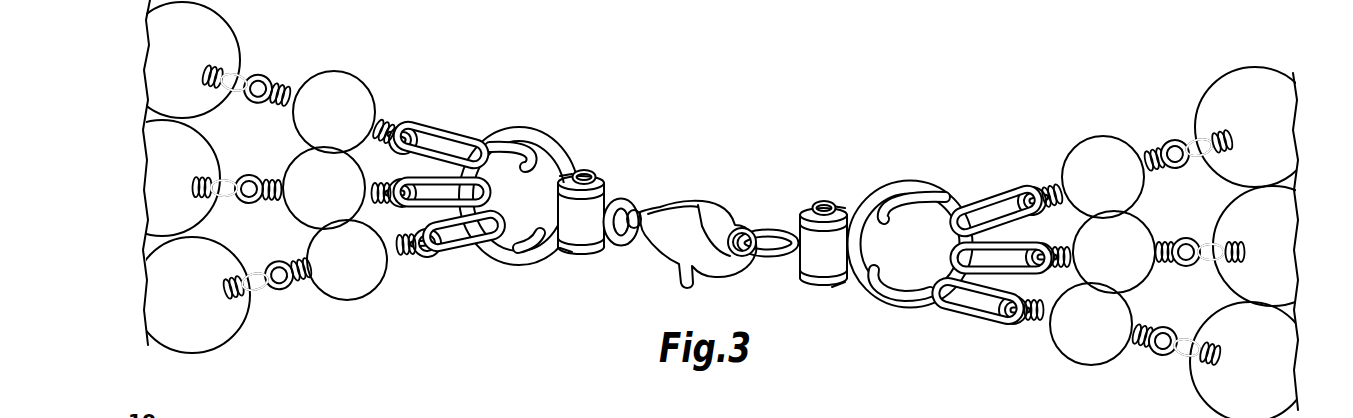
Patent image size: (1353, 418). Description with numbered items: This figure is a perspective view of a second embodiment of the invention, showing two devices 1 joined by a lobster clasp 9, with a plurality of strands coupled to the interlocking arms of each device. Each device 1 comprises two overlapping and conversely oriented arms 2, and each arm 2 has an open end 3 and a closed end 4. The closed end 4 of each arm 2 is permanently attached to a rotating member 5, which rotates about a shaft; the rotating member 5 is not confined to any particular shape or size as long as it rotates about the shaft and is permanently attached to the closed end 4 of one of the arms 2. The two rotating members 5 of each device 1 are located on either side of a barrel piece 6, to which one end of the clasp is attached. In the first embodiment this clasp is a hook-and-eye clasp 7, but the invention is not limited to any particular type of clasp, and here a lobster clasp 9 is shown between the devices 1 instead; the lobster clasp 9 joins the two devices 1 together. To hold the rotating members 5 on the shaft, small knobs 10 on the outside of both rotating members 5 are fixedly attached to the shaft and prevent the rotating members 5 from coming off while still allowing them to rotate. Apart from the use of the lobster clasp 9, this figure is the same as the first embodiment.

The device 1 is at (498, 108).
The arm 2 is at (475, 140).
The open end 3 is at (533, 162).
The closed end 4 is at (567, 170).
The rotating member 5 is at (594, 172).
The barrel piece 6 is at (575, 230).
The hook-and-eye clasp 7 is at (624, 202).
The lobster clasp 9 is at (708, 186).
The knob 10 is at (582, 170).